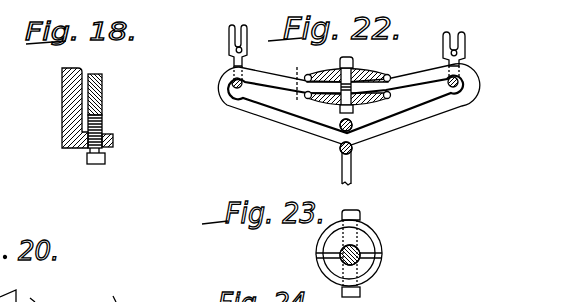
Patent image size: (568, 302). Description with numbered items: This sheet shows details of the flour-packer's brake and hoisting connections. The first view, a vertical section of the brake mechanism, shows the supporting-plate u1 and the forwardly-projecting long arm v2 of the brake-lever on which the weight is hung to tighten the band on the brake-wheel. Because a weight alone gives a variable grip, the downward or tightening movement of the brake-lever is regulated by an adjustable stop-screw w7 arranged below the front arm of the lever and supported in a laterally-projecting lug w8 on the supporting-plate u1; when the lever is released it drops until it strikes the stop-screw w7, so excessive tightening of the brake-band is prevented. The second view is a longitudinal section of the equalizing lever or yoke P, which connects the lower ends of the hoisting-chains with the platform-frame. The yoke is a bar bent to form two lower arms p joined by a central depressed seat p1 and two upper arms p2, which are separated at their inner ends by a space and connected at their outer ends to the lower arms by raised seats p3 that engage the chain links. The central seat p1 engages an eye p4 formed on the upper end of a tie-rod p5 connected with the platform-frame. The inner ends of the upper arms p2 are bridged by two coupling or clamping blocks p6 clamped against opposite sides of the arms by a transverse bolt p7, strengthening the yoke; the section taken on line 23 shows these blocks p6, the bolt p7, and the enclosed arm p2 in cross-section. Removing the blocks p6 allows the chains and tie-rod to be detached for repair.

In FIG. 18, the supporting-plate u1 is at (62, 90).
In FIG. 18, the long arm of the brake-lever v2 is at (102, 97).
In FIG. 18, the laterally-projecting lug w8 is at (113, 140).
In FIG. 18, the adjustable stop-screw w7 is at (95, 164).
In FIG. 22, the lower arms p is at (272, 120).
In FIG. 22, the equalizing lever or yoke P is at (390, 141).
In FIG. 22, the central depressed seat p1 is at (356, 131).
In FIG. 22, the upper arms p2 is at (275, 78).
In FIG. 23, the upper arms p2 is at (359, 264).
In FIG. 22, the raised seats p3 is at (232, 70).
In FIG. 22, the eye p4 is at (339, 149).
In FIG. 22, the tie-rod p5 is at (352, 166).
In FIG. 22, the coupling or clamping blocks p6 is at (360, 71).
In FIG. 23, the coupling or clamping blocks p6 is at (366, 234).
In FIG. 23, the transverse bolt p7 is at (360, 211).
In FIG. 22, the section line 23- 23 is at (293, 85).